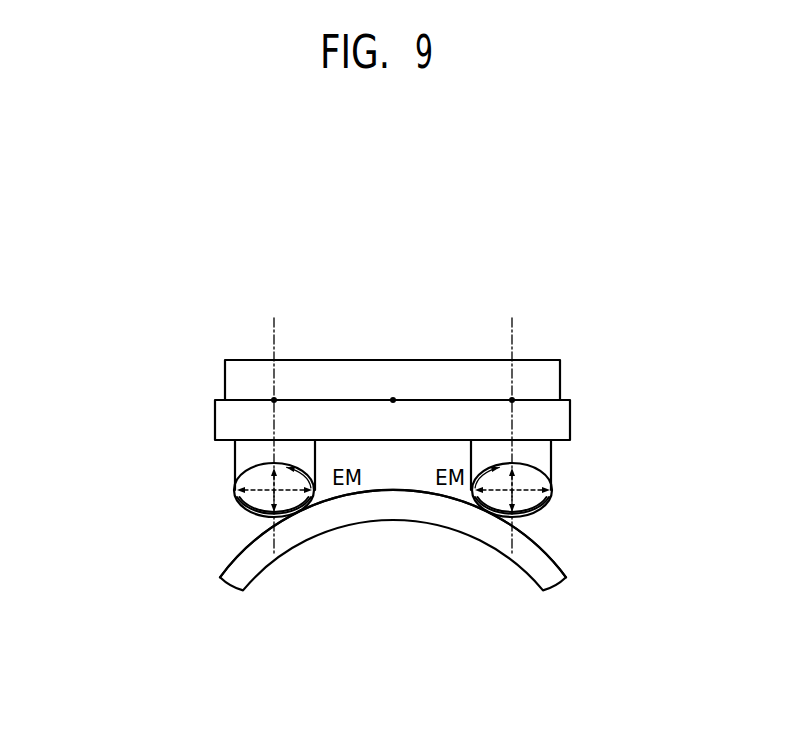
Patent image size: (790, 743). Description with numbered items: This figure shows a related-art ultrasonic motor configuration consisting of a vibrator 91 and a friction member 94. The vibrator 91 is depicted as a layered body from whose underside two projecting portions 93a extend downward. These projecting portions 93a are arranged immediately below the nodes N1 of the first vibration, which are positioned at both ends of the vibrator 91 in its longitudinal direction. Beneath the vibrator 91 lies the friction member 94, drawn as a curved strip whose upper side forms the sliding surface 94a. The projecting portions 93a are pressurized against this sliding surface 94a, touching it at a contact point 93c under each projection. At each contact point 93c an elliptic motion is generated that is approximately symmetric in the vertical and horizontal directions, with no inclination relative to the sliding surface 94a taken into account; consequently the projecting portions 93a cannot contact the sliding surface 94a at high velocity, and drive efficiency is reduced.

The vibrator 91 is at (88, 312).
The projecting portion 93a is at (250, 451).
The contact point 93c is at (293, 510).
The friction member 94 is at (219, 574).
The sliding surface 94a is at (240, 554).
The node of the first vibration N1 is at (512, 400).